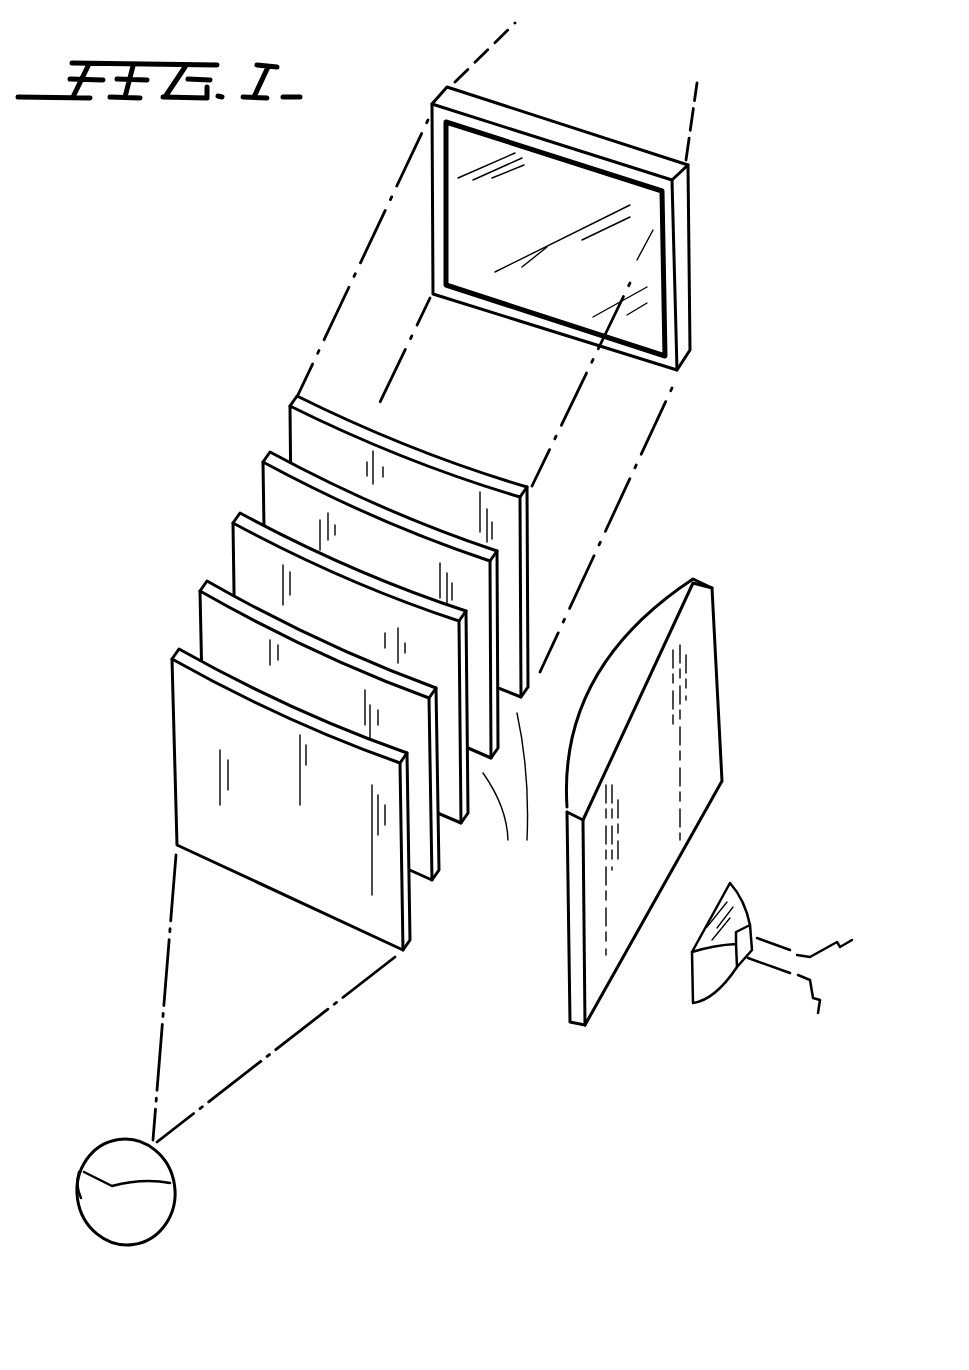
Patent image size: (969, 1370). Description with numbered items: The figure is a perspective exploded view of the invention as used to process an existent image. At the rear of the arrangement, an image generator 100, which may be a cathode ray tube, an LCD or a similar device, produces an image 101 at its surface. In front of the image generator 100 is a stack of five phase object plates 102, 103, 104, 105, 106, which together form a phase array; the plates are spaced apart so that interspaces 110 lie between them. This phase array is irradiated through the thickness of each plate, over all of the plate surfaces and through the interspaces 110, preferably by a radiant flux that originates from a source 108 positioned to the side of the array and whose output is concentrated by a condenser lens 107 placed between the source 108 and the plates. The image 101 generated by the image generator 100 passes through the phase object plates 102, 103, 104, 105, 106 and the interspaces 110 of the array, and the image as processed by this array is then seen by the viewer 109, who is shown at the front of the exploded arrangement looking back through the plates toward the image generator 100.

The image generator 100 is at (577, 137).
The image 101 is at (630, 283).
The phase object plate 102 is at (290, 425).
The phase object plate 103 is at (262, 493).
The phase object plate 104 is at (230, 562).
The phase object plate 105 is at (198, 625).
The phase object plate 106 is at (172, 767).
The condenser lens 107 is at (695, 703).
The source 108 is at (740, 908).
The viewer 109 is at (175, 1192).
The interspaces 110 is at (420, 900).